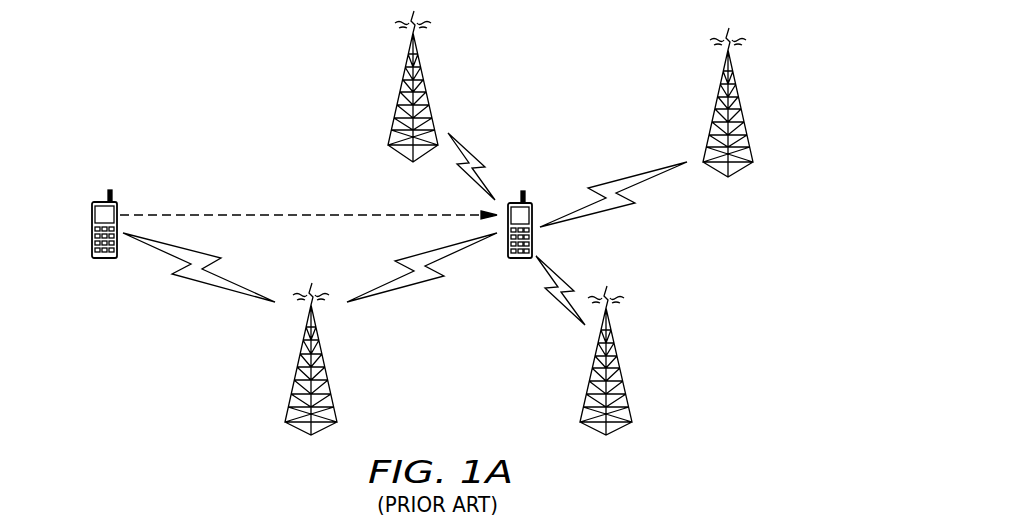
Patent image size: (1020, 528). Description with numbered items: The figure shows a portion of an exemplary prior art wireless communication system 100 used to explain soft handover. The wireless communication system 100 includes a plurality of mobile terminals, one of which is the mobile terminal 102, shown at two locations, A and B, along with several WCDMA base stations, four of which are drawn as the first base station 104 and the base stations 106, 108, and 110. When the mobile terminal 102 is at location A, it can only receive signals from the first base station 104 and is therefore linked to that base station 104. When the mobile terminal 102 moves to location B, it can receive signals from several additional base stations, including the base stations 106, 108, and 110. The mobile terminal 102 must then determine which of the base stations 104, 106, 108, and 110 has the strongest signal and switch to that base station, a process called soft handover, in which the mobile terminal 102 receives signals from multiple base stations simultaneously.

The wireless communication system 100 is at (130, 68).
The mobile terminal 102 is at (92, 233).
The first base station 104 is at (330, 384).
The base station 106 is at (430, 99).
The base station 108 is at (627, 386).
The base station 110 is at (712, 110).